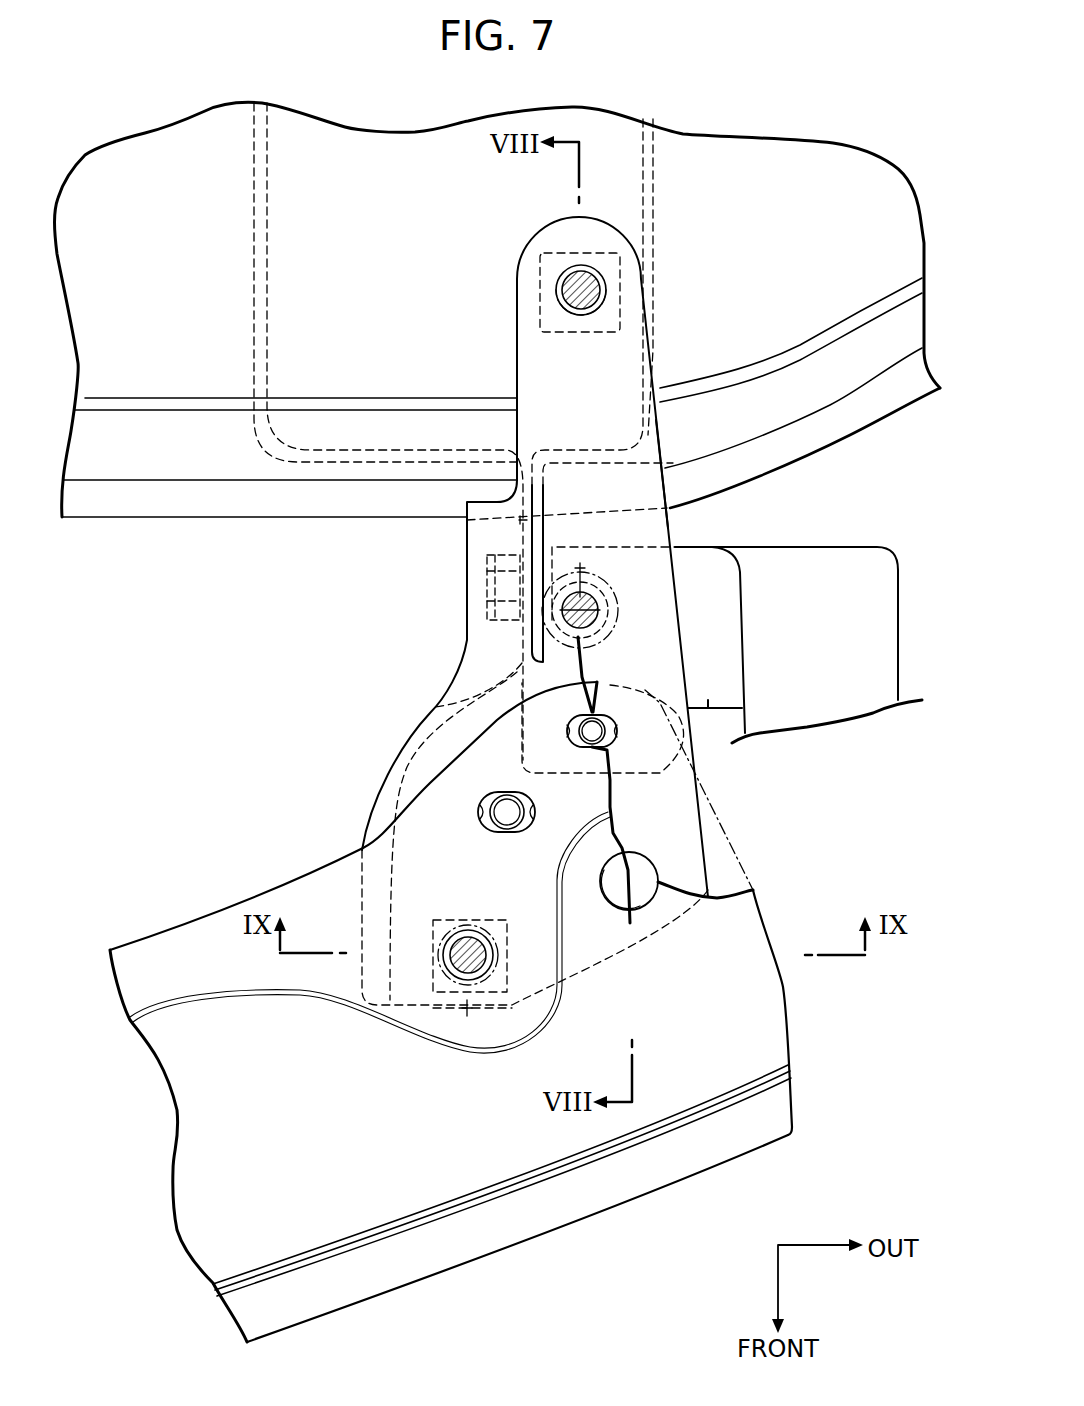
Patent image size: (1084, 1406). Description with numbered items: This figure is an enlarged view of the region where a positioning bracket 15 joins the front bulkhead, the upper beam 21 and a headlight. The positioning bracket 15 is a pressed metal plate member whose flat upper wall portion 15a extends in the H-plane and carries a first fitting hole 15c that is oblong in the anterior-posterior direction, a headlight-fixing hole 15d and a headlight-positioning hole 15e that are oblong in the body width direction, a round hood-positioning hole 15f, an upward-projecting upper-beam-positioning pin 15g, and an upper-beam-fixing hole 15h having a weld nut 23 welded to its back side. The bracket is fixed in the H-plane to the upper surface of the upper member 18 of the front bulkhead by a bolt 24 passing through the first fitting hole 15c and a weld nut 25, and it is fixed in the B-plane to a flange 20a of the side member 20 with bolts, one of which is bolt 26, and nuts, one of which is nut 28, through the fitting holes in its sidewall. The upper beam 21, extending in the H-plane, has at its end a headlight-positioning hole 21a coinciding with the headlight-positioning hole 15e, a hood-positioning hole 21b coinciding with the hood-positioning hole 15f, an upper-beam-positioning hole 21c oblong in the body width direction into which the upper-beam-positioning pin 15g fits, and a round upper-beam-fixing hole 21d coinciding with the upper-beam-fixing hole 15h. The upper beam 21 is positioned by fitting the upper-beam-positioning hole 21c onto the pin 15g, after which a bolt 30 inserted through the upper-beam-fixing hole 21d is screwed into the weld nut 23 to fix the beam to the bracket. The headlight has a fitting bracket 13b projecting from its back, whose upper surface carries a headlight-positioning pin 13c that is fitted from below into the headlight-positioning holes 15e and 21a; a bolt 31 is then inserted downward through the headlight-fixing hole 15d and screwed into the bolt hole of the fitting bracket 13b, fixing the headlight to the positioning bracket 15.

The fitting bracket 13b is at (708, 708).
The headlight-positioning pin 13c is at (601, 737).
The positioning bracket 15 is at (438, 667).
The upper wall portion 15a is at (668, 528).
The first fitting hole 15c is at (558, 303).
The headlight-fixing hole 15d is at (597, 610).
The headlight-positioning hole 15e is at (607, 710).
The hood-positioning hole 15f is at (637, 853).
The upper-beam-positioning pin 15g is at (507, 814).
The upper-beam-fixing hole 15h is at (467, 980).
The upper member 18 is at (184, 530).
The side member 20 is at (245, 280).
The flange 20a is at (545, 532).
The upper beam 21 is at (198, 910).
The headlight-positioning hole 21a is at (567, 735).
The hood-positioning hole 21b is at (641, 907).
The upper-beam-positioning hole 21c is at (482, 822).
The upper-beam-fixing hole 21d is at (453, 947).
The weld nut 23 is at (427, 983).
The bolt 24 is at (568, 275).
The weld nut 25 is at (620, 265).
The bolt 26 is at (487, 580).
The nut 28 is at (575, 562).
The bolt 30 is at (497, 950).
The bolt 31 is at (597, 628).